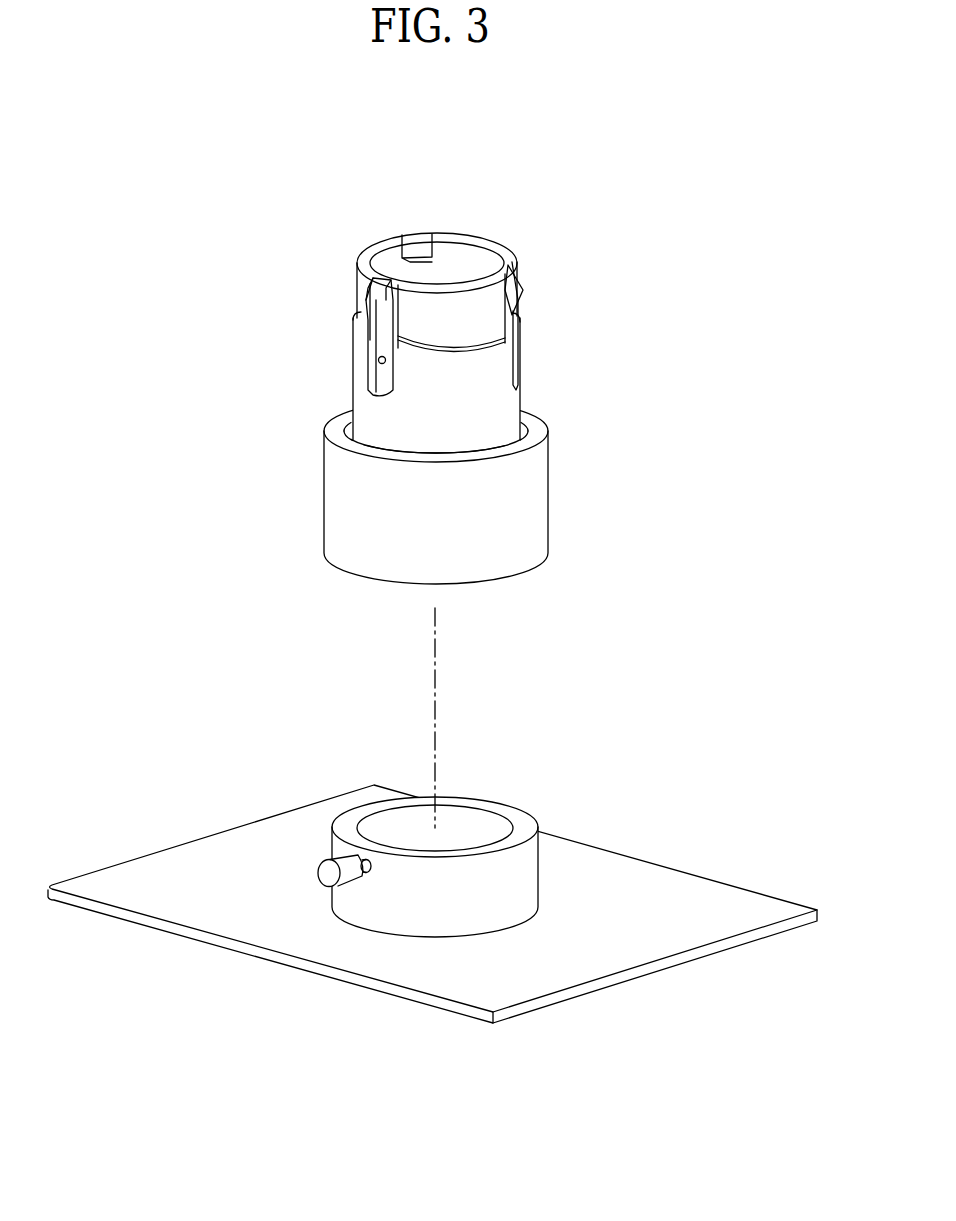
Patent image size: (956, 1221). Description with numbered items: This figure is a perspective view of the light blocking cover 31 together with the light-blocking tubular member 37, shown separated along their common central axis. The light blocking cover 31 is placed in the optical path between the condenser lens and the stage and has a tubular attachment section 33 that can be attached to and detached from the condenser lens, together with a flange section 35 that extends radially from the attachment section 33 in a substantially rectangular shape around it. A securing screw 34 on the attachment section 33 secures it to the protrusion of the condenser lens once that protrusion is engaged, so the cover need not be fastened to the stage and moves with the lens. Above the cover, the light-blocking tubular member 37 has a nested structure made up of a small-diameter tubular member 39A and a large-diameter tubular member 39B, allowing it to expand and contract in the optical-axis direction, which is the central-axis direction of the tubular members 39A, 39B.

The light blocking cover 31 is at (432, 848).
The attachment section 33 is at (538, 866).
The securing screw 34 is at (320, 877).
The flange section 35 is at (122, 880).
The light-blocking tubular member 37 is at (376, 343).
The small-diameter tubular member 39A is at (353, 341).
The large-diameter tubular member 39B is at (323, 486).